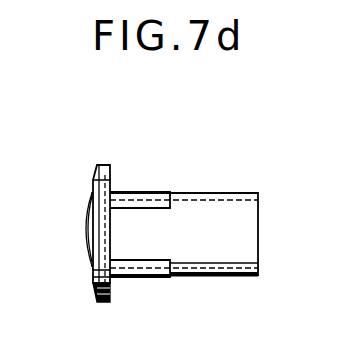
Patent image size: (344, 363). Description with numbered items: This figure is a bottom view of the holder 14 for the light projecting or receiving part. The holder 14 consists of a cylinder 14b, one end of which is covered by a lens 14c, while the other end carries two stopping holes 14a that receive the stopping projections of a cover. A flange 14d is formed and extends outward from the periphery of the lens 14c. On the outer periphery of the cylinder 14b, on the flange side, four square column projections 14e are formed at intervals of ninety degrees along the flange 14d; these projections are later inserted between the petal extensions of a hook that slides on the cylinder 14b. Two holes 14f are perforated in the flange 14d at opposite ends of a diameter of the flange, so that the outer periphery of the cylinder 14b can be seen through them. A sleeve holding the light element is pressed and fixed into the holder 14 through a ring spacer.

The holder 14 is at (170, 246).
The stopping holes 14a is at (236, 192).
The cylinder 14b is at (204, 278).
The lens 14c is at (83, 240).
The flange 14d is at (106, 303).
The square column projections 14e is at (141, 191).
The holes 14f is at (91, 178).